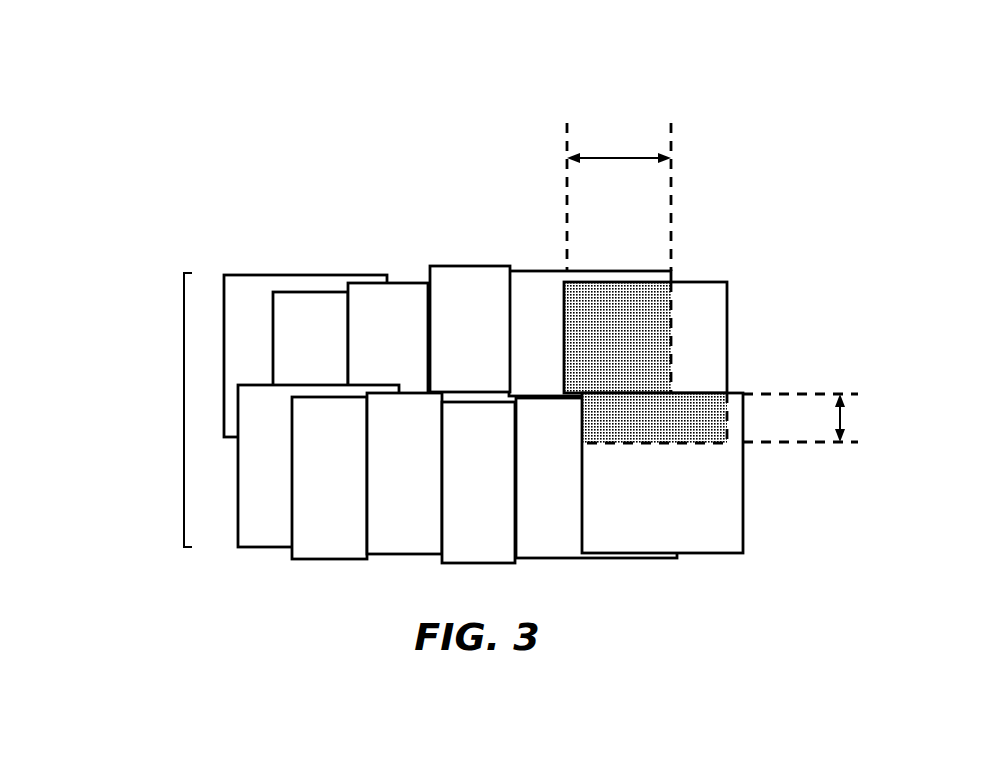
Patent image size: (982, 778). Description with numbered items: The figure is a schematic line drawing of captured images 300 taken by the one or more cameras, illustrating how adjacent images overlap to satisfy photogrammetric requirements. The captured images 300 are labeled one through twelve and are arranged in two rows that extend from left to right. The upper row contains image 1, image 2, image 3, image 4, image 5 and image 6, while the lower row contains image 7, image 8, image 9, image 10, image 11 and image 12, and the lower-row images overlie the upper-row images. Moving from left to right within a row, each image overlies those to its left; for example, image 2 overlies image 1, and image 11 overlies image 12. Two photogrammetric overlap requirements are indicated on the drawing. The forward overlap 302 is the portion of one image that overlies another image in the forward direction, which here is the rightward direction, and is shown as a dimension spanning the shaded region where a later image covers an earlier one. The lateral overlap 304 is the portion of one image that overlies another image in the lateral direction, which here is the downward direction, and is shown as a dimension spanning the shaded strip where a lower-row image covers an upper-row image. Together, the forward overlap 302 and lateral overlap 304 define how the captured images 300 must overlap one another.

The captured image 1 is at (305, 356).
The captured image 2 is at (310, 342).
The captured image 3 is at (388, 340).
The captured image 4 is at (470, 329).
The captured image 5 is at (590, 333).
The captured image 6 is at (645, 337).
The captured image 7 is at (662, 473).
The captured image 8 is at (596, 478).
The captured image 9 is at (478, 482).
The captured image 10 is at (404, 473).
The captured image 11 is at (329, 478).
The captured image 12 is at (318, 466).
The captured images 300 is at (414, 414).
The forward overlap 302 is at (620, 157).
The lateral overlap 304 is at (843, 422).